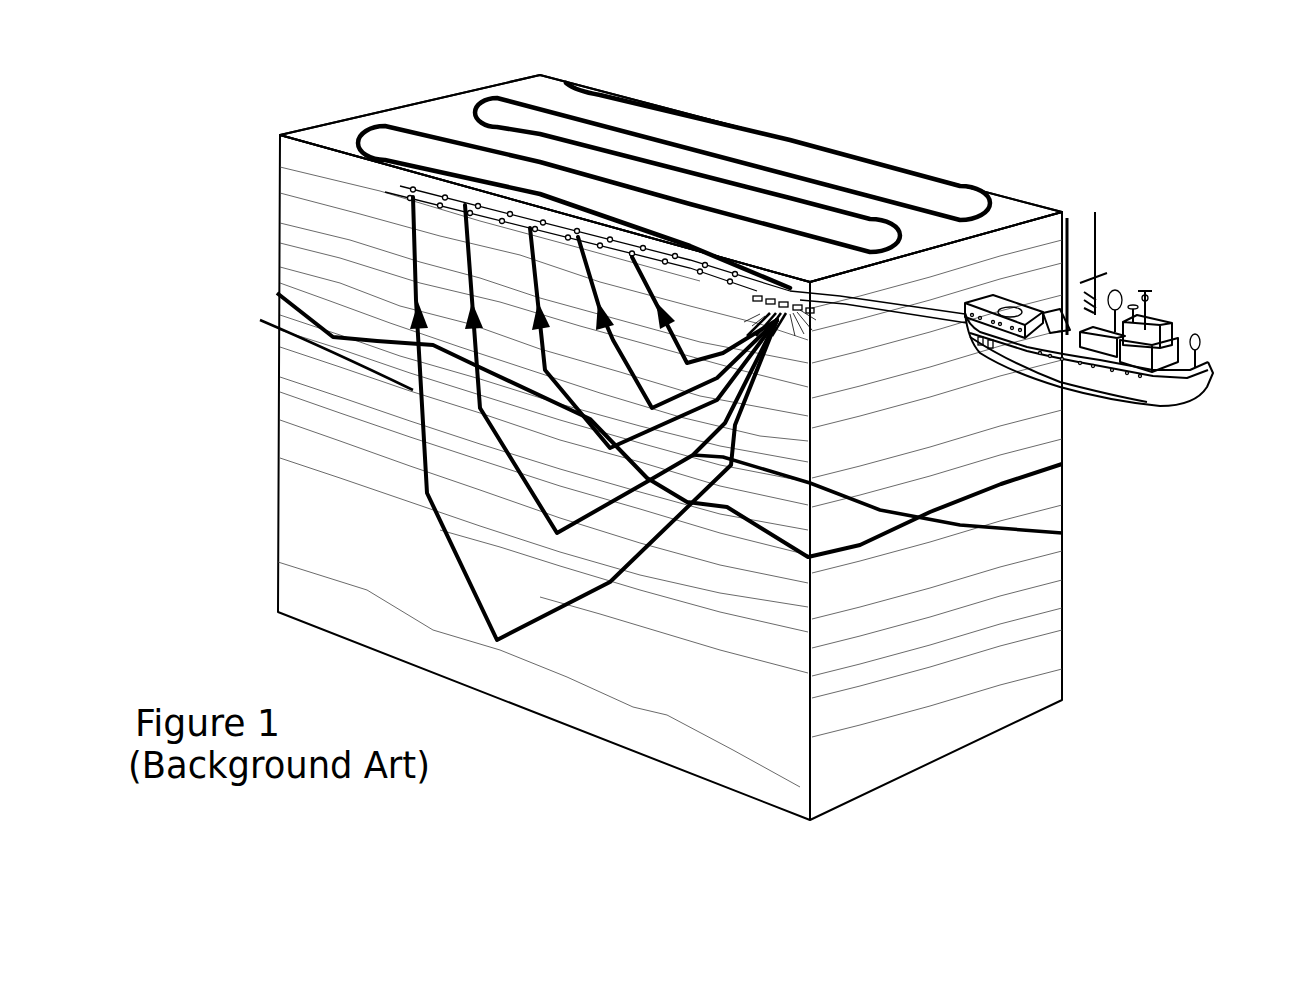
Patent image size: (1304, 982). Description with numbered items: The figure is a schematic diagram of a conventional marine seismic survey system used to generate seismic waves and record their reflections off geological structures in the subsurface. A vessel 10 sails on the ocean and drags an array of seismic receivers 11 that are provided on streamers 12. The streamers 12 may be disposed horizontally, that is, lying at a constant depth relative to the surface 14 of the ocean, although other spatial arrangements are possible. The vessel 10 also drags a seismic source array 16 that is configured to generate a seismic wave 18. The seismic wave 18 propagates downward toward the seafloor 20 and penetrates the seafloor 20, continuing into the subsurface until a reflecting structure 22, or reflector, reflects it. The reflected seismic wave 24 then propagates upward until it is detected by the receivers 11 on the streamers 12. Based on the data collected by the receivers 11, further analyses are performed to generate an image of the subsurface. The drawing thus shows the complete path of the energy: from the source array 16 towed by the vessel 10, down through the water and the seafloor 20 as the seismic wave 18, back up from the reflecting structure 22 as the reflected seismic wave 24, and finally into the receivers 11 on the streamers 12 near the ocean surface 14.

The vessel 10 is at (1177, 310).
The seismic receivers 11 is at (463, 222).
The streamers 12 is at (595, 222).
The surface of the ocean 14 is at (445, 113).
The seismic source array 16 is at (790, 292).
The seismic wave 18 is at (1062, 531).
The seafloor 20 is at (1022, 466).
The reflecting structure 22 is at (373, 462).
The reflected seismic wave 24 is at (322, 346).